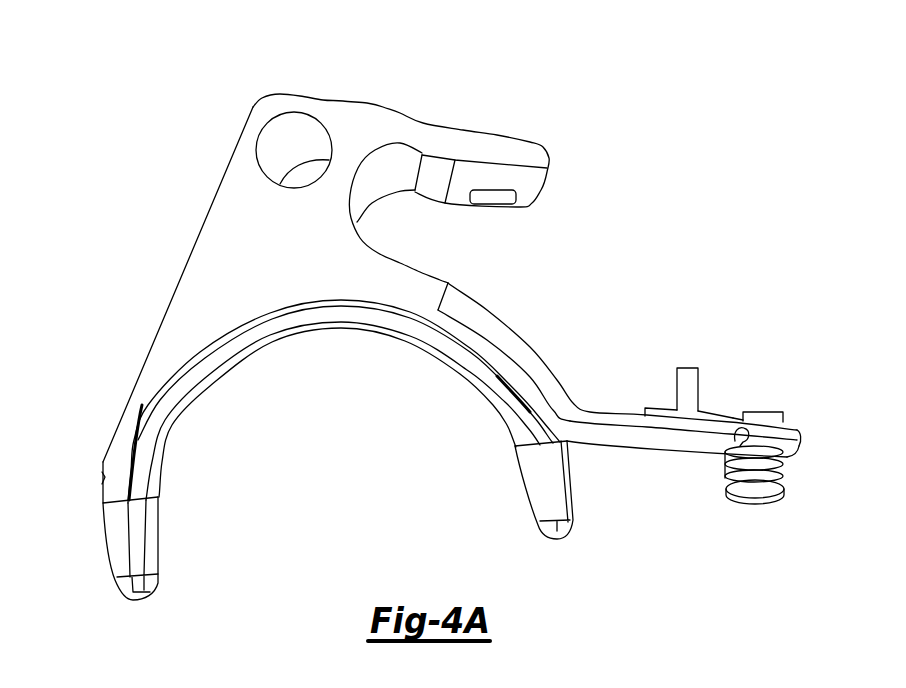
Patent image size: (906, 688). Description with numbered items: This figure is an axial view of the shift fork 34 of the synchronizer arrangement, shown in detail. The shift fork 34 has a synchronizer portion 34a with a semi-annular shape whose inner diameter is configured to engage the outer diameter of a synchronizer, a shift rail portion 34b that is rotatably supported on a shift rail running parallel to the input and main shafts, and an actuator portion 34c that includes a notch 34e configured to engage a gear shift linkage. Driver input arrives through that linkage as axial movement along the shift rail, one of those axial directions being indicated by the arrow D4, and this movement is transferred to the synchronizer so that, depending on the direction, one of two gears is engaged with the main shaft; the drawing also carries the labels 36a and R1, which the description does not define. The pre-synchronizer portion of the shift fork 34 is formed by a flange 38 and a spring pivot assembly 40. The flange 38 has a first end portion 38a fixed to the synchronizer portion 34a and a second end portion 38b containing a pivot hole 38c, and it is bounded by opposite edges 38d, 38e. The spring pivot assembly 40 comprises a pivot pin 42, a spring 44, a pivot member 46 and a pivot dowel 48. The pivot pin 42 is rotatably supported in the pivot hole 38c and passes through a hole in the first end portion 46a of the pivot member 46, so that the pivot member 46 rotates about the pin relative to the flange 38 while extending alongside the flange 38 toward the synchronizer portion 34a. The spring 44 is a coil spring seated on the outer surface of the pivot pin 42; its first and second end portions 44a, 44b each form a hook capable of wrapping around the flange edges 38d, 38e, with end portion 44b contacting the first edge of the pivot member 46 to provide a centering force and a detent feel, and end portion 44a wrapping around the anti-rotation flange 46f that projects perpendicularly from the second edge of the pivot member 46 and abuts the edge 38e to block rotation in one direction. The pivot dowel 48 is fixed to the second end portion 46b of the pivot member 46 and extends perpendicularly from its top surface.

The shift fork 34 is at (614, 130).
The synchronizer portion 34a is at (127, 430).
The shift rail portion 34b is at (240, 160).
The actuator portion 34c is at (485, 143).
The notch 34e is at (487, 197).
The shift rail portion 36a is at (541, 2).
The flange 38 is at (608, 420).
The first end portion 38a is at (537, 360).
The second end portion 38b is at (798, 443).
The pivot hole 38c is at (792, 455).
The edge 38d is at (635, 430).
The edge 38e is at (595, 440).
The spring pivot assembly 40 is at (781, 387).
The pivot pin 42 is at (773, 412).
The spring 44 is at (783, 475).
The first end portion 44a is at (727, 440).
The second end portion 44b is at (720, 463).
The pivot member 46 is at (730, 418).
The first end portion 46a is at (762, 412).
The second end portion 46b is at (653, 412).
The anti-rotation flange 46f is at (708, 412).
The pivot dowel 48 is at (690, 368).
The axial direction D4 is at (222, 4).
The radius reference R1 is at (691, 15).